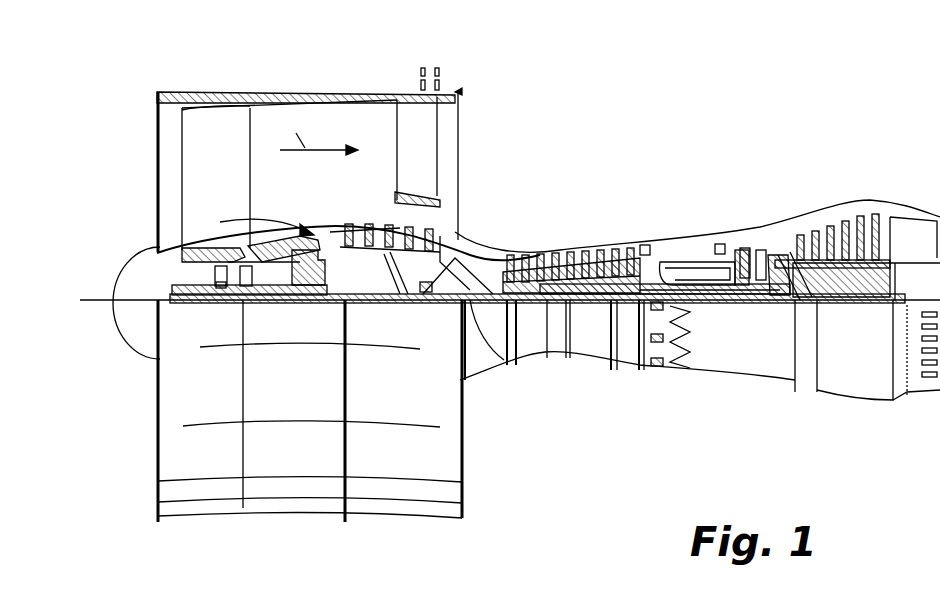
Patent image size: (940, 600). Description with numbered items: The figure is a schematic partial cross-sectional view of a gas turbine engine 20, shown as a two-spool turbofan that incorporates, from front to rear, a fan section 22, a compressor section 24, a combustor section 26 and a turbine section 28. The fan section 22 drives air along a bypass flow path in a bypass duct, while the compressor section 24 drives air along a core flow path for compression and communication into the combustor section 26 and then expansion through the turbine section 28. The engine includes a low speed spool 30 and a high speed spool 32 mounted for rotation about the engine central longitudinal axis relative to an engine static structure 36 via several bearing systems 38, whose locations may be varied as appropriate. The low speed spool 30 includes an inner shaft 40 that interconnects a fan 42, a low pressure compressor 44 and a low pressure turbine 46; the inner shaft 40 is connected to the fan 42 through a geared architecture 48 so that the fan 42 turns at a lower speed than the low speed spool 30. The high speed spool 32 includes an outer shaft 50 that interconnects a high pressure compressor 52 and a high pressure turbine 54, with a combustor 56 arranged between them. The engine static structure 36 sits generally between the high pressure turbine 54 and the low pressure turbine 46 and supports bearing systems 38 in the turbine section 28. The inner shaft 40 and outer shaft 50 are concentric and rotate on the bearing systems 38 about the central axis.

The gas turbine engine 20 is at (704, 118).
The fan section 22 is at (332, 70).
The compressor section 24 is at (660, 181).
The combustor section 26 is at (725, 179).
The turbine section 28 is at (733, 181).
The low speed spool 30 is at (593, 306).
The high speed spool 32 is at (625, 280).
The engine static structure 36 is at (628, 368).
The bearing systems 38 is at (224, 306).
The inner shaft 40 is at (504, 360).
The fan 42 is at (221, 189).
The low pressure compressor 44 is at (445, 202).
The low pressure turbine 46 is at (842, 222).
The geared architecture 48 is at (320, 306).
The outer shaft 50 is at (690, 294).
The high pressure compressor 52 is at (572, 258).
The high pressure turbine 54 is at (740, 275).
The combustor 56 is at (690, 266).